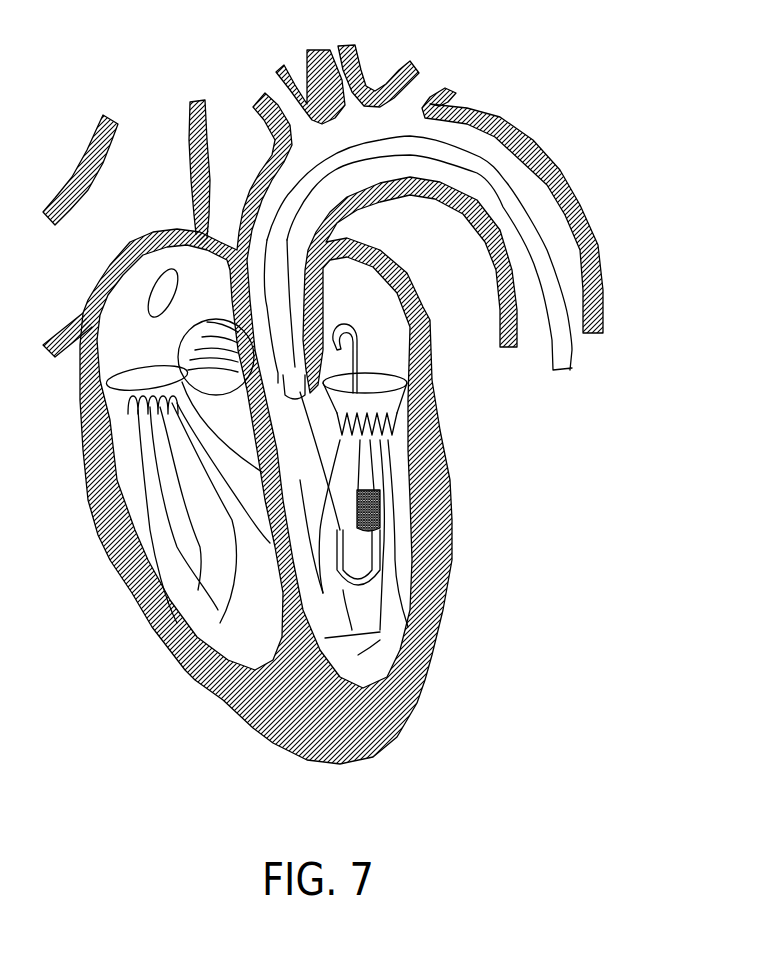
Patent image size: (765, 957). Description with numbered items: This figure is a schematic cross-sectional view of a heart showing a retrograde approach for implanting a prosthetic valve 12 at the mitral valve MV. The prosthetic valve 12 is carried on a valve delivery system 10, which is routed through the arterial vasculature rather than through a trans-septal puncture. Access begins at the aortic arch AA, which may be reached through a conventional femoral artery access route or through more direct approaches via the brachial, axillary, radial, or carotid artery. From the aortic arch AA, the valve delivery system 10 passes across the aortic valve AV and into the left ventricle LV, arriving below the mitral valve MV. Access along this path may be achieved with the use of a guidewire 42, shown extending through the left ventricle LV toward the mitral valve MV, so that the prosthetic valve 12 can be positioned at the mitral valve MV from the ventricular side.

The valve delivery system 10 is at (280, 247).
The guidewire 42 is at (345, 347).
The prosthetic valve 12 is at (380, 515).
The aortic arch AA is at (548, 161).
The mitral valve MV is at (385, 406).
The left ventricle LV is at (410, 562).
The aortic valve AV is at (270, 432).